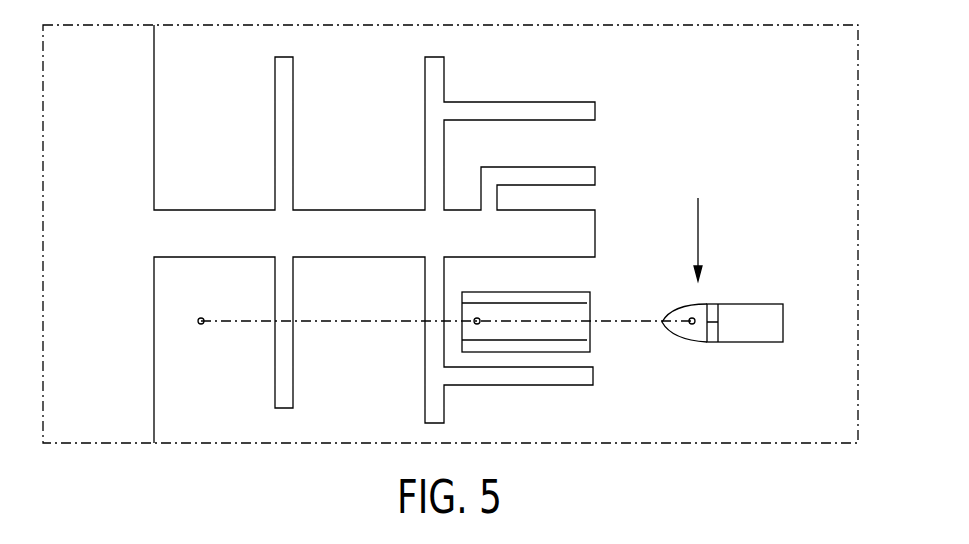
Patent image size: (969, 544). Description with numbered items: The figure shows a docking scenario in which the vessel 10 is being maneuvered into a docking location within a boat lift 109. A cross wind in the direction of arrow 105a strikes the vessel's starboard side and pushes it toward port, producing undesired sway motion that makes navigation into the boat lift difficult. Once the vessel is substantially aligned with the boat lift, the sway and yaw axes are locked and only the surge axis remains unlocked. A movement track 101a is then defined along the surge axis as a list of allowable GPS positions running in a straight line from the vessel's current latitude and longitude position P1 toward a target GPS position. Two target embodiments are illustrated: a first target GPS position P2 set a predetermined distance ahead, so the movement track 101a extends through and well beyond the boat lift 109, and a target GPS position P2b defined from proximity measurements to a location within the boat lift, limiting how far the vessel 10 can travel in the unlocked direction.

The vessel 10 is at (743, 332).
The arrow 105a is at (700, 233).
The boat lift 109 is at (524, 310).
The movement track 101a is at (454, 323).
The latitude and longitude position P1 is at (678, 302).
The first target GPS position P2 is at (203, 303).
The target GPS position P2b is at (473, 294).